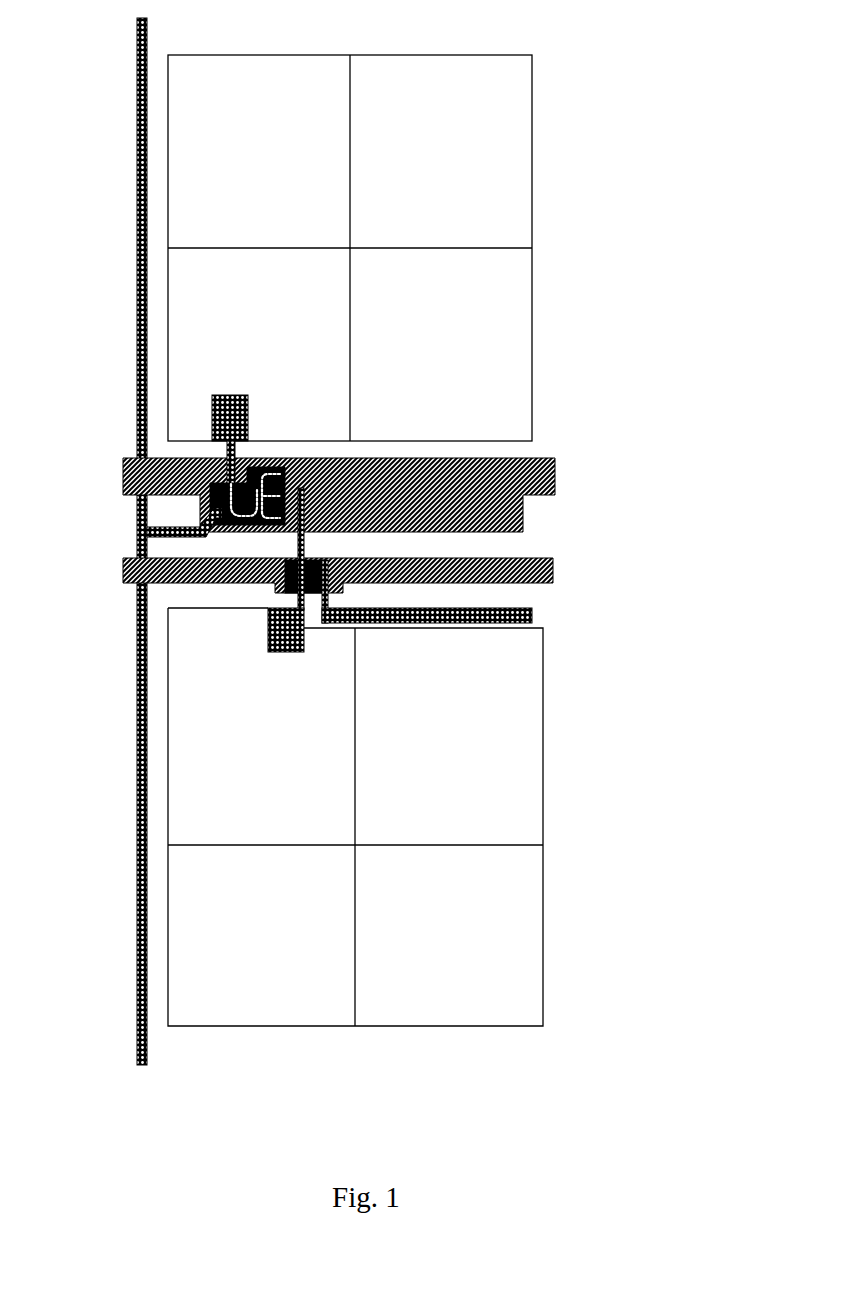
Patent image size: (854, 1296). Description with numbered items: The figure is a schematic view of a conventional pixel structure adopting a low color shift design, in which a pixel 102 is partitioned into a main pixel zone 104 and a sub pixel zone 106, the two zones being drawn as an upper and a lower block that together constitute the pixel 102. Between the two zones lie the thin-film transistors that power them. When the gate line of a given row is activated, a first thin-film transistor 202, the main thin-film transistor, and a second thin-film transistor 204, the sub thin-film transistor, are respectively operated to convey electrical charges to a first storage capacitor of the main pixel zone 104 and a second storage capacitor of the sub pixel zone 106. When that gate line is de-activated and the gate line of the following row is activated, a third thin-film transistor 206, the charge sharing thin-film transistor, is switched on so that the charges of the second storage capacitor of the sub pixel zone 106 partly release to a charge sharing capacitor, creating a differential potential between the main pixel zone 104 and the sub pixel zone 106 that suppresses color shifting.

The pixel 102 is at (459, 540).
The main pixel zone 104 is at (478, 392).
The sub pixel zone 106 is at (480, 675).
The first thin-film transistor 202 is at (226, 463).
The second thin-film transistor 204 is at (200, 512).
The third thin-film transistor 206 is at (262, 581).